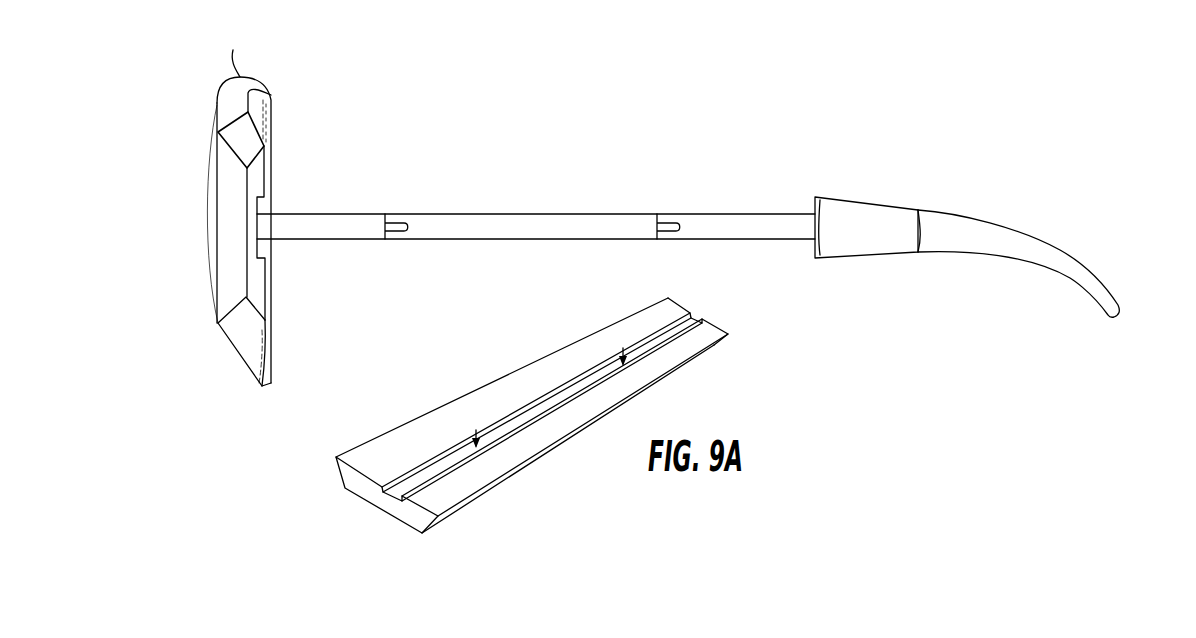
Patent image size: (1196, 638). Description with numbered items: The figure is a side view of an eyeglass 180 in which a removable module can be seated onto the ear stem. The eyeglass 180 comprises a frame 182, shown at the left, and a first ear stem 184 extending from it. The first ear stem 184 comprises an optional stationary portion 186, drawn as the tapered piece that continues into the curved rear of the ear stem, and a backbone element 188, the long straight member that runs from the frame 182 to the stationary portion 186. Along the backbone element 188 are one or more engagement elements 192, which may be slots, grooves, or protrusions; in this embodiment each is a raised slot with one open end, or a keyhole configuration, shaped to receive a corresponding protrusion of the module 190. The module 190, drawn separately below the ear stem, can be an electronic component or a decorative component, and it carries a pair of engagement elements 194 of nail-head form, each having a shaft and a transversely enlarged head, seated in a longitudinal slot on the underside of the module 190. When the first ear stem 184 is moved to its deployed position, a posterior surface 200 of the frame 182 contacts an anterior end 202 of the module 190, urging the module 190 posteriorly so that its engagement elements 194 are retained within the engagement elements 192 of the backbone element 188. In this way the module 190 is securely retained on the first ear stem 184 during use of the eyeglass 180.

The eyeglass 180 is at (727, 127).
The frame 182 is at (233, 353).
The first ear stem 184 is at (877, 204).
The stationary portion 186 is at (864, 256).
The backbone element 188 is at (516, 213).
The module 190 is at (369, 505).
The engagement elements 192 is at (405, 222).
The engagement elements 194 is at (478, 435).
The posterior surface 200 is at (257, 173).
The anterior end 202 is at (350, 482).